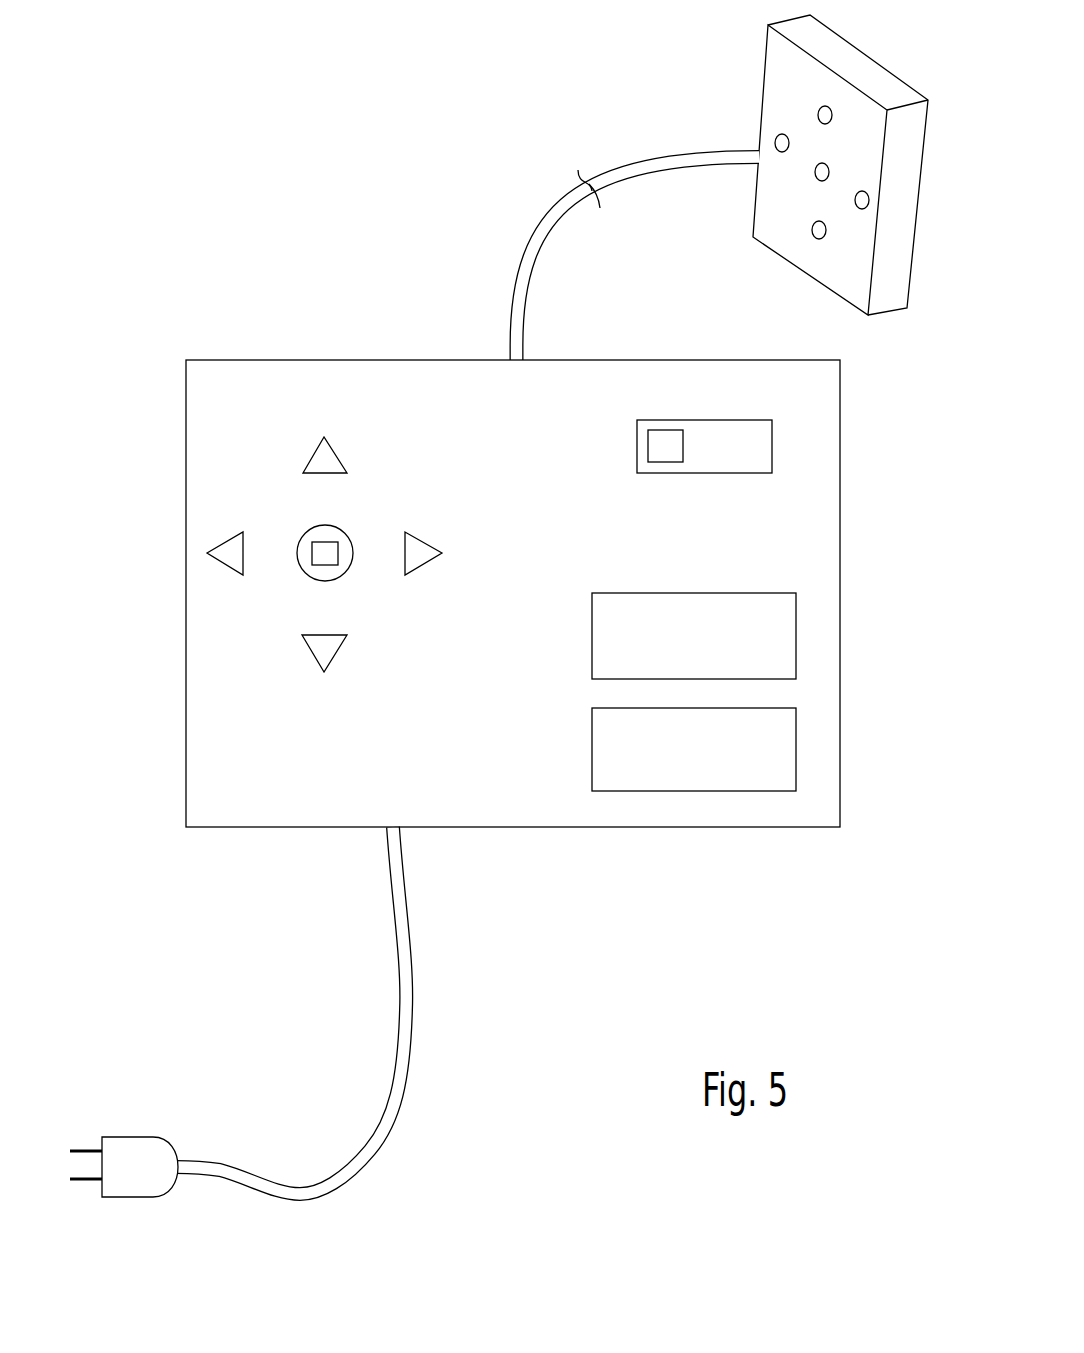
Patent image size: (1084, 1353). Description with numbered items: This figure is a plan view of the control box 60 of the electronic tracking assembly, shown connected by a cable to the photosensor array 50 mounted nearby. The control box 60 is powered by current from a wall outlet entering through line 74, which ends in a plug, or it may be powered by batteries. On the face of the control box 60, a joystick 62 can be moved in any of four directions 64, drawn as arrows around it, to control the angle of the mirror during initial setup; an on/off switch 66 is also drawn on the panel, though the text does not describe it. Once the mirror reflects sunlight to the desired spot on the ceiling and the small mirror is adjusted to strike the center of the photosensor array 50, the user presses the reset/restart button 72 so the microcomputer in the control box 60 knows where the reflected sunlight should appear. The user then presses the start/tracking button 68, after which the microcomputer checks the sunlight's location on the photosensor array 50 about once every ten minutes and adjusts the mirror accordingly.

The photosensor array 50 is at (912, 220).
The control box 60 is at (235, 372).
The joystick 62 is at (332, 547).
The four directions 64 is at (322, 453).
The on/off switch 66 is at (758, 443).
The start/tracking button 68 is at (790, 630).
The reset/restart button 72 is at (790, 739).
The line 74 is at (410, 1019).